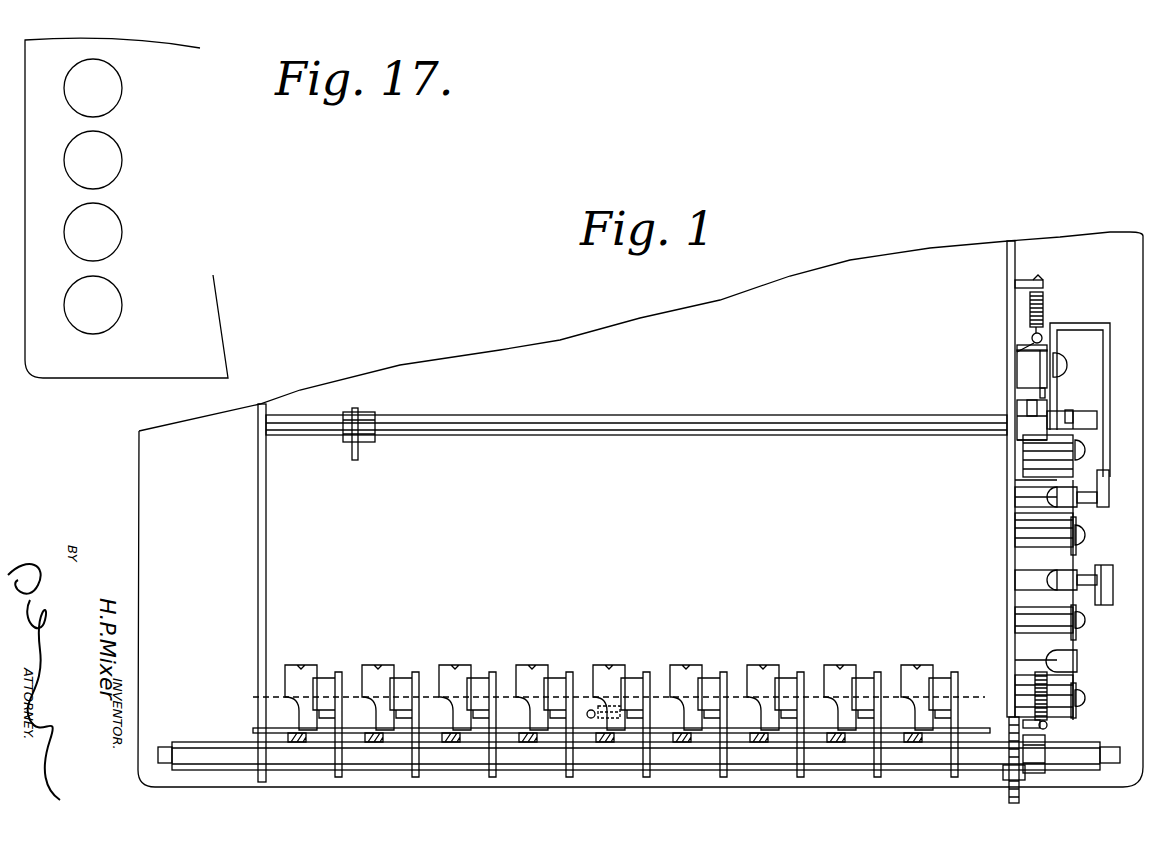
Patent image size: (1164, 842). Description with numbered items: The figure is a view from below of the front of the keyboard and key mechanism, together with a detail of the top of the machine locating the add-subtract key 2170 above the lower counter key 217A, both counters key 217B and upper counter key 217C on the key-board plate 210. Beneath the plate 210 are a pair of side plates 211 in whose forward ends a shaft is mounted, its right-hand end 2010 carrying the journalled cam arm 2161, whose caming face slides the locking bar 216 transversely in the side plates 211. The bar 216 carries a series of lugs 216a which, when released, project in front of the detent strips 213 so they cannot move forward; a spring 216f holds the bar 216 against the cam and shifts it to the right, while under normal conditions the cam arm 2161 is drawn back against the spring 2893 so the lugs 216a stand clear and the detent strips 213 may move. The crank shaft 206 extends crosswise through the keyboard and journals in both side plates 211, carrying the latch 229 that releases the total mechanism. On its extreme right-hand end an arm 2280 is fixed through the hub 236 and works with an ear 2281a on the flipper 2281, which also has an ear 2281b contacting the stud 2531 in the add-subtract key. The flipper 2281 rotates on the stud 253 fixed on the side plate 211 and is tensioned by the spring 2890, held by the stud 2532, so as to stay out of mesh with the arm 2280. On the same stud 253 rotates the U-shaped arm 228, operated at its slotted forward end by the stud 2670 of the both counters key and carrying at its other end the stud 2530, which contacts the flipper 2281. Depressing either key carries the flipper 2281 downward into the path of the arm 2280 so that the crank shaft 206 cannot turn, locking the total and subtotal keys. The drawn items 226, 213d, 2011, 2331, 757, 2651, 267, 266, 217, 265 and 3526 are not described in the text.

In FIG. 17, the key-board plate 210 is at (213, 315).
In FIG. 1, the key-board plate 210 is at (139, 471).
In FIG. 17, the add-subtract key 2170 is at (110, 82).
In FIG. 1, the add-subtract key 2170 is at (1090, 497).
In FIG. 17, the upper counter key 217C is at (112, 157).
In FIG. 17, the both counters key 217B is at (112, 231).
In FIG. 17, the lower counter key 217A is at (112, 300).
In FIG. 1, the side plates 211 is at (258, 505).
In FIG. 1, the crank shaft 206 is at (760, 414).
In FIG. 1, the hub 236 is at (368, 412).
In FIG. 1, the latch 229 is at (359, 458).
In FIG. 1, the rail 226 is at (355, 734).
In FIG. 1, the detent strips 213 is at (300, 666).
In FIG. 1, the lugs 216a is at (700, 690).
In FIG. 1, the locking bar 216 is at (583, 720).
In FIG. 1, the spring 216f is at (605, 705).
In FIG. 1, the bracket block 213d is at (400, 735).
In FIG. 1, the shaft end 2011 is at (198, 748).
In FIG. 1, the right hand end of shaft 2010 is at (935, 771).
In FIG. 1, the cam arm 2161 is at (1010, 800).
In FIG. 1, the collar 2331 is at (1034, 775).
In FIG. 1, the stud 2532 is at (1040, 285).
In FIG. 1, the spring 2890 is at (1044, 305).
In FIG. 1, the flipper 2281 is at (1030, 352).
In FIG. 1, the stud 253 is at (1022, 368).
In FIG. 1, the stud 2530 is at (1040, 392).
In FIG. 1, the arm 2280 is at (1030, 405).
In FIG. 1, the ear 2281a is at (1017, 416).
In FIG. 1, the screw 757 is at (1060, 360).
In FIG. 1, the stud 2531 is at (1071, 410).
In FIG. 1, the ear 2281b is at (1098, 418).
In FIG. 1, the sleeve 2651 is at (1028, 455).
In FIG. 1, the key knob 267 is at (1086, 441).
In FIG. 1, the U-shaped arm 228 is at (1105, 482).
In FIG. 1, the key stem 266 is at (1020, 512).
In FIG. 1, the washer 217 is at (1079, 530).
In FIG. 1, the key sleeve 265 is at (1025, 530).
In FIG. 1, the stud 2670 is at (1108, 586).
In FIG. 1, the spring 2893 is at (1018, 672).
In FIG. 1, the pin 3526 is at (1050, 725).